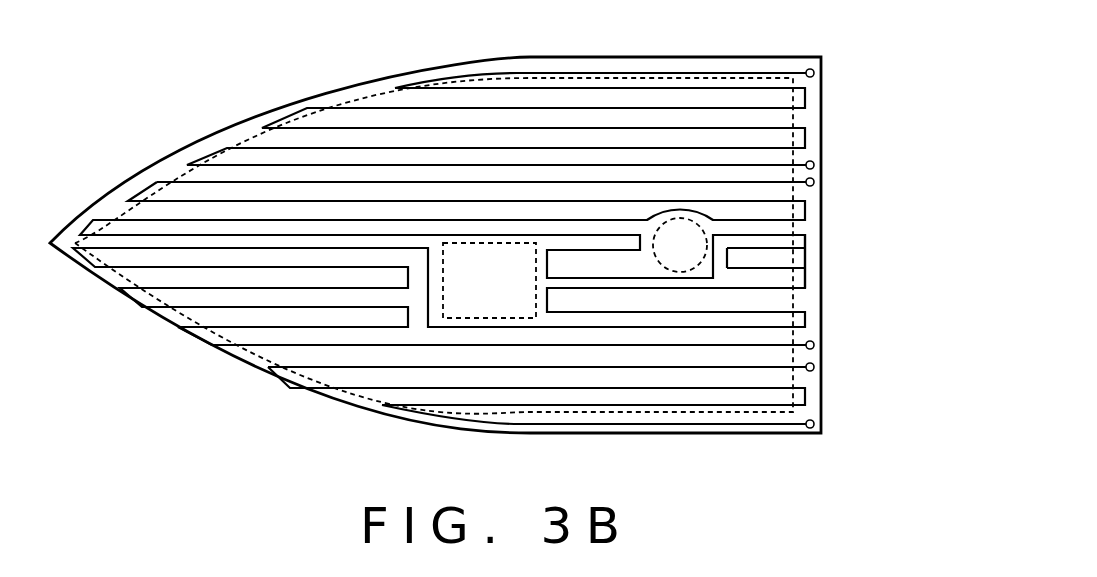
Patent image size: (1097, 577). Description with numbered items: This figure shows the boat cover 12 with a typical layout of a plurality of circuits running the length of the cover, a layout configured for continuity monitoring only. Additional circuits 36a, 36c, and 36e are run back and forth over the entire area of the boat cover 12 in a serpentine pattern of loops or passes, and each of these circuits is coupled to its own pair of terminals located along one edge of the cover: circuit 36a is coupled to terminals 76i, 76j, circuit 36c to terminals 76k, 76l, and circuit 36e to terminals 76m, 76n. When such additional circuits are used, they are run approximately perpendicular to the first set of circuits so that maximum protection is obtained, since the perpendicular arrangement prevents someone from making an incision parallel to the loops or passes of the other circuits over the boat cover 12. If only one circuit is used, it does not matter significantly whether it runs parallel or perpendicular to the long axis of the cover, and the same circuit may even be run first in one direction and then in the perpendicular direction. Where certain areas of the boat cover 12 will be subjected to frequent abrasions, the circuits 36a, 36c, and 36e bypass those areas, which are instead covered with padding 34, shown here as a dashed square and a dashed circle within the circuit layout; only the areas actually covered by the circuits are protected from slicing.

The boat cover 12 is at (360, 398).
The padding 34 is at (502, 302).
The additional circuit 36a is at (652, 107).
The additional circuit 36c is at (807, 242).
The additional circuit 36e is at (727, 403).
The terminal 76i is at (815, 73).
The terminal 76j is at (815, 164).
The terminal 76k is at (815, 182).
The terminal 76l is at (815, 344).
The terminal 76m is at (815, 367).
The terminal 76n is at (813, 421).